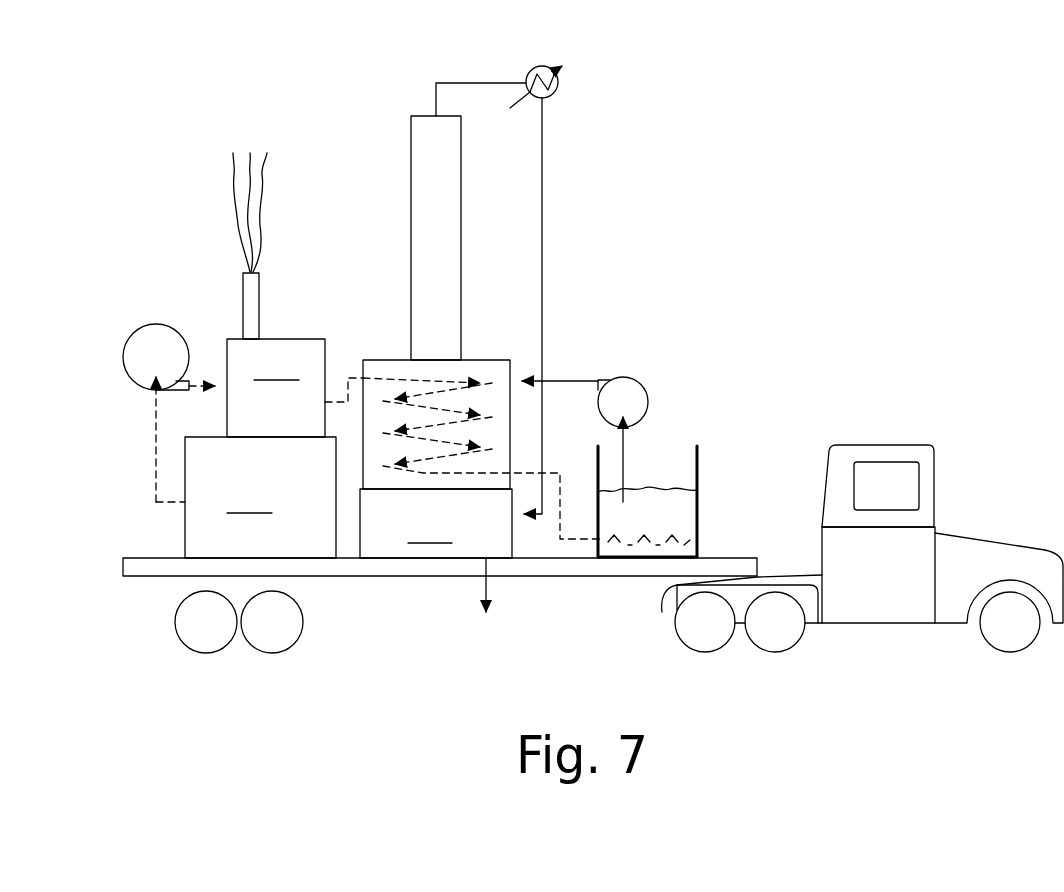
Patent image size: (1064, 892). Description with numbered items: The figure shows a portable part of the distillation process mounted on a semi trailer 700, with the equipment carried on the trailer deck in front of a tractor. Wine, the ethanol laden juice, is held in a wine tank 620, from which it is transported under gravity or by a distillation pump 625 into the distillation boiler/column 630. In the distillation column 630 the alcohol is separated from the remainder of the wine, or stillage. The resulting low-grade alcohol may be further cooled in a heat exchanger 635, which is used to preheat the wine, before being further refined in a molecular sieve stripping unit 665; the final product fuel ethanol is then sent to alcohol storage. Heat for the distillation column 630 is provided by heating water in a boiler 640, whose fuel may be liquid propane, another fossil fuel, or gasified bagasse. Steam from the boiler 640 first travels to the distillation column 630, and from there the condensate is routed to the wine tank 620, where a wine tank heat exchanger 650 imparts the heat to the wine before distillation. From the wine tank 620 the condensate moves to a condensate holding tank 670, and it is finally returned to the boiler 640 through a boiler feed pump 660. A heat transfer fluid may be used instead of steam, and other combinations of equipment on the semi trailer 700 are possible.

The semi trailer 700 is at (392, 702).
The wine tank 620 is at (687, 508).
The distillation pump 625 is at (638, 393).
The distillation boiler/column 630 is at (366, 289).
The heat exchanger 635 is at (533, 98).
The boiler 640 is at (295, 295).
The wine tank heat exchanger 650 is at (670, 536).
The boiler feed pump 660 is at (165, 348).
The molecular sieve stripping unit 665 is at (436, 523).
The condensate holding tank 670 is at (260, 497).